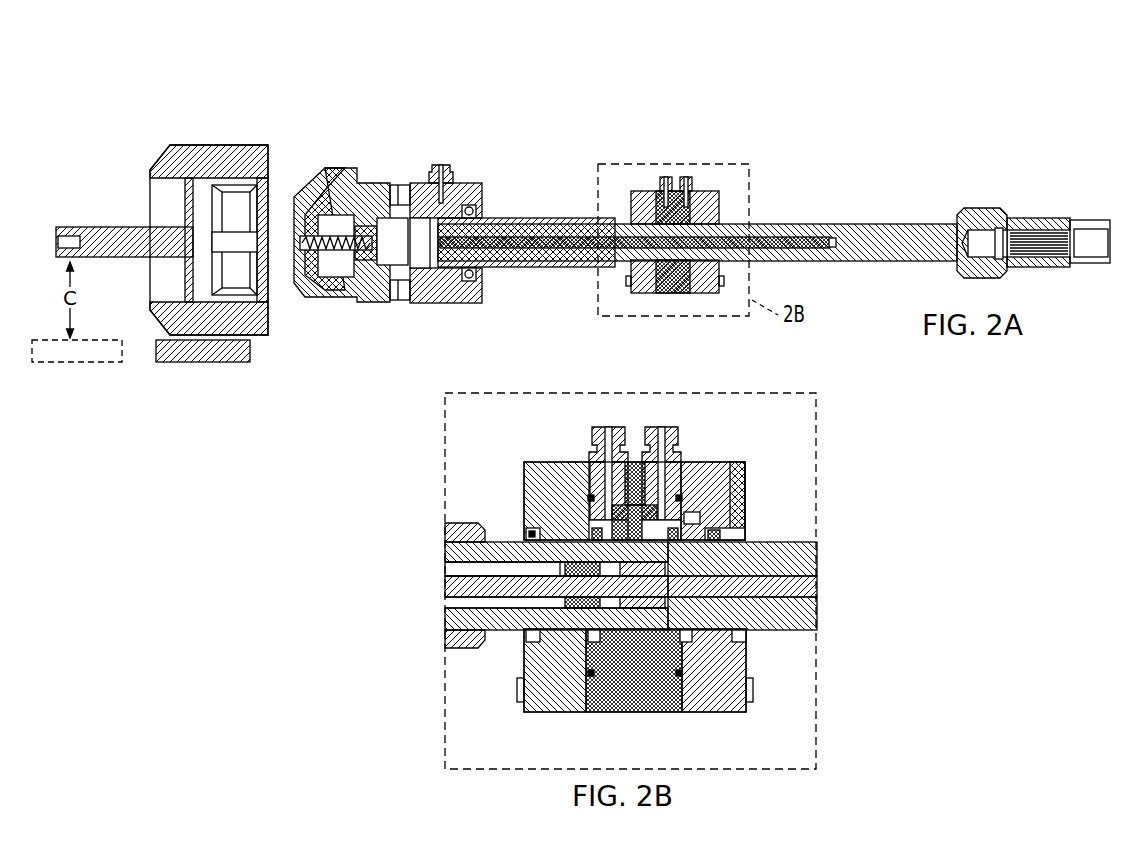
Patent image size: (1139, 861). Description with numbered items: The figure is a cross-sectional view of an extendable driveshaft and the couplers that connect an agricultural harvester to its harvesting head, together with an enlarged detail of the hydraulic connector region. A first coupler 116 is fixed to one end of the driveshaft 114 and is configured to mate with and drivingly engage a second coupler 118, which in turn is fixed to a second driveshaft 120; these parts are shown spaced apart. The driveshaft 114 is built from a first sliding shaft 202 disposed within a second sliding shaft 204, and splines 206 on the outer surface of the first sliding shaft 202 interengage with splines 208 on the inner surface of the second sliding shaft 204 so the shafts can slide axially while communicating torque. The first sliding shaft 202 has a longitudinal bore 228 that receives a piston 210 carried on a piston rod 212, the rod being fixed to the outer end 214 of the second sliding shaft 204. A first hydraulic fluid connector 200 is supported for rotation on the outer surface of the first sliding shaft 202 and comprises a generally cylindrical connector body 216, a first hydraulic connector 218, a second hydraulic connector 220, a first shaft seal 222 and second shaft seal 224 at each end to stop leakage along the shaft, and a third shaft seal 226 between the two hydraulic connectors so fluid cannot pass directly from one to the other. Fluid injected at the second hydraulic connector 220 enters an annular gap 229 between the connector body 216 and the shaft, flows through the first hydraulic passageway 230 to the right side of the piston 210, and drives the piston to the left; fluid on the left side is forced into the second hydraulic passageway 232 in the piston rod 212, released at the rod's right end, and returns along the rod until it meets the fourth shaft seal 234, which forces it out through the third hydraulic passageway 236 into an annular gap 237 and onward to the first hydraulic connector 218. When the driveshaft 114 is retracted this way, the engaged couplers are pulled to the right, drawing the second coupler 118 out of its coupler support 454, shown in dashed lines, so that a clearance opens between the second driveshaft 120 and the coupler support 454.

In FIG. 2A, the driveshaft 114 is at (853, 130).
In FIG. 2A, the first coupler 116 is at (392, 128).
In FIG. 2A, the second coupler 118 is at (224, 124).
In FIG. 2A, the second driveshaft 120 is at (100, 160).
In FIG. 2A, the first hydraulic fluid connector 200 is at (660, 144).
In FIG. 2B, the first hydraulic fluid connector 200 is at (778, 447).
In FIG. 2A, the first sliding shaft 202 is at (855, 223).
In FIG. 2A, the second sliding shaft 204 is at (556, 217).
In FIG. 2B, the splines 206 is at (490, 542).
In FIG. 2B, the splines 208 is at (447, 545).
In FIG. 2B, the piston 210 is at (505, 626).
In FIG. 2B, the piston rod 212 is at (456, 583).
In FIG. 2A, the outer end 214 is at (448, 145).
In FIG. 2B, the connector body 216 is at (706, 462).
In FIG. 2B, the first hydraulic connector 218 is at (666, 425).
In FIG. 2B, the second hydraulic connector 220 is at (600, 425).
In FIG. 2B, the first shaft seal 222 is at (763, 647).
In FIG. 2B, the second shaft seal 224 is at (528, 535).
In FIG. 2B, the third shaft seal 226 is at (637, 465).
In FIG. 2B, the longitudinal bore 228 is at (462, 569).
In FIG. 2B, the annular gap 229 is at (553, 527).
In FIG. 2B, the first hydraulic passageway 230 is at (600, 524).
In FIG. 2B, the second hydraulic passageway 232 is at (800, 583).
In FIG. 2B, the fourth shaft seal 234 is at (638, 606).
In FIG. 2B, the third hydraulic passageway 236 is at (737, 543).
In FIG. 2B, the annular gap 237 is at (686, 512).
In FIG. 2A, the coupler support 454 is at (65, 362).